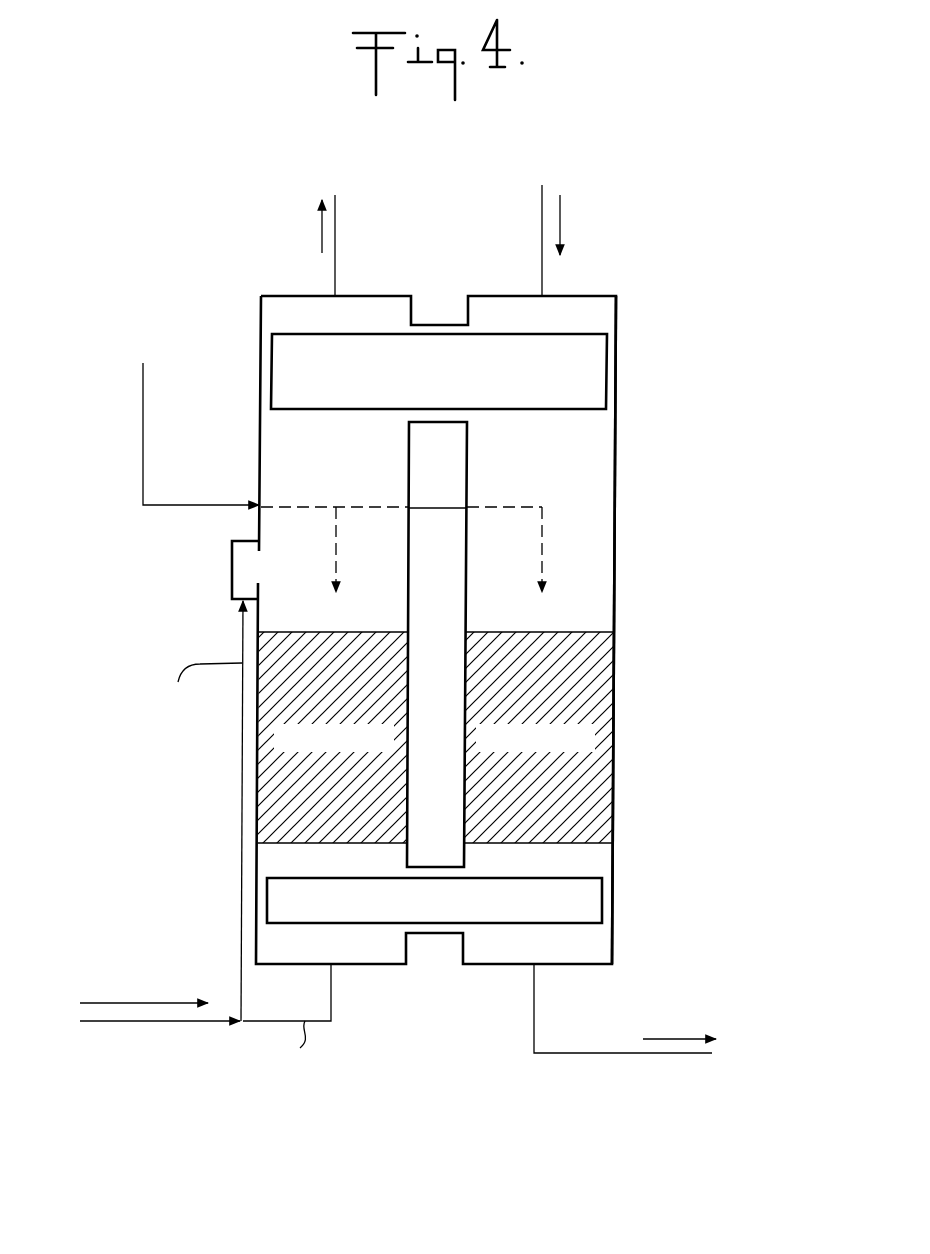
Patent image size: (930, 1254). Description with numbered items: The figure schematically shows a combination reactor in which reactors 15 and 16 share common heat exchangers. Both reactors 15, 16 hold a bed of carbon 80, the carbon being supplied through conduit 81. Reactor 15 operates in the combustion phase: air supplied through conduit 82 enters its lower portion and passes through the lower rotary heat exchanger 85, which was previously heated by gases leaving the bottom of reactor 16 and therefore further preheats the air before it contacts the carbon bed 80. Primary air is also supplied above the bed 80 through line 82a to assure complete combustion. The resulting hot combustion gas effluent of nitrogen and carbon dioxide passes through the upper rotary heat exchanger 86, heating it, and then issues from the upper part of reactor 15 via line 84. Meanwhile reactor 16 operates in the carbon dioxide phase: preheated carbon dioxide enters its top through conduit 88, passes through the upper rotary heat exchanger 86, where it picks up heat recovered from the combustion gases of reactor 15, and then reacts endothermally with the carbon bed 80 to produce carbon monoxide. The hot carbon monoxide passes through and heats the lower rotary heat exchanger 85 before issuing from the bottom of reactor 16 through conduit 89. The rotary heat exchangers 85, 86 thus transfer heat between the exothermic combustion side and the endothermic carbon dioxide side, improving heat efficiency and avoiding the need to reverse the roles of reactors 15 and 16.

The reactor 15 is at (261, 448).
The reactor 16 is at (616, 470).
The bed of carbon 80 is at (265, 806).
The conduit 81 is at (143, 428).
The conduit 82 is at (135, 1021).
The line 82a is at (241, 753).
The line 84 is at (335, 238).
The lower rotary heat exchanger 85 is at (600, 921).
The upper rotary heat exchanger 86 is at (606, 334).
The conduit 88 is at (542, 236).
The conduit 89 is at (536, 1032).